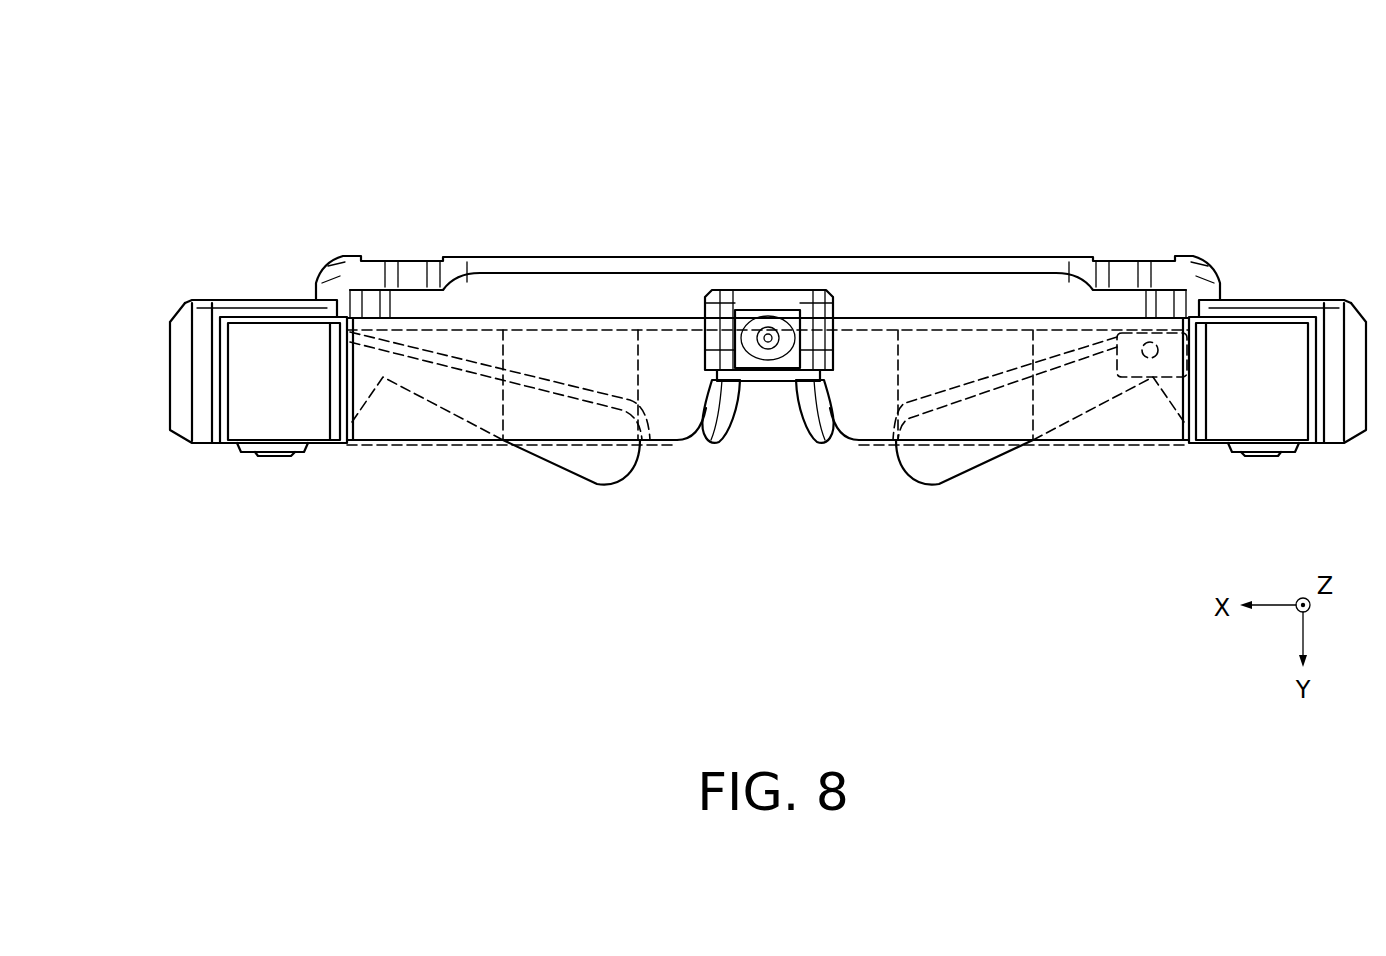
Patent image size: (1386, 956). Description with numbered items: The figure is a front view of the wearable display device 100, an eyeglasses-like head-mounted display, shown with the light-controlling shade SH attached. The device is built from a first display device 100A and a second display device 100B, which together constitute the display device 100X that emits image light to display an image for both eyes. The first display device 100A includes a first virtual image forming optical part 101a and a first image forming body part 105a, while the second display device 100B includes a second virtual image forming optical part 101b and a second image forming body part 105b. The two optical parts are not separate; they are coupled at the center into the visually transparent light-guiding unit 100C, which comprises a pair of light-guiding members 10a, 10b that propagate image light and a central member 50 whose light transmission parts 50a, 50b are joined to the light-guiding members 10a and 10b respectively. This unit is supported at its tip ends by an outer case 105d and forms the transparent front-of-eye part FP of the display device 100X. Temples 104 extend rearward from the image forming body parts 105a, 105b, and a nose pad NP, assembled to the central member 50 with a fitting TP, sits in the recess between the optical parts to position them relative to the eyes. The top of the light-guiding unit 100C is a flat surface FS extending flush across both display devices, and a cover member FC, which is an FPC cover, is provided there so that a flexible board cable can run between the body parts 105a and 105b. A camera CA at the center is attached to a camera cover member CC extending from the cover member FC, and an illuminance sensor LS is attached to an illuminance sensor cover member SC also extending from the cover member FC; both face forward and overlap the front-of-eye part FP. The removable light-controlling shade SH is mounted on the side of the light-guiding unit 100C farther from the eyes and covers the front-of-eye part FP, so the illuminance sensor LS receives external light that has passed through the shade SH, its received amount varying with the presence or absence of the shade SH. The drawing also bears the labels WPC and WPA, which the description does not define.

The wearable display device 100 is at (426, 127).
The first display device 100A is at (1129, 416).
The second display device 100B is at (410, 483).
The visually transparent light-guiding unit 100C is at (768, 538).
The display device 100X is at (767, 453).
The light-guiding member 10a is at (1130, 425).
The light-guiding member 10b is at (405, 425).
The first virtual image forming optical part 101a is at (1043, 425).
The second virtual image forming optical part 101b is at (527, 425).
The temples 104 is at (610, 487).
The first image forming body part 105a is at (1280, 425).
The second image forming body part 105b is at (253, 425).
The outer case 105d is at (265, 298).
The central member 50 is at (767, 498).
The light transmission part 50a is at (873, 425).
The light transmission part 50b is at (665, 425).
The nose pad NP is at (727, 432).
The fitting TP is at (755, 397).
The camera CA is at (738, 337).
The camera cover member CC is at (845, 300).
The front-of-eye part FP is at (489, 317).
The light-controlling shade SH is at (550, 347).
The cover member FC is at (617, 320).
The flat surface FS is at (962, 320).
The illuminance sensor cover member SC is at (1130, 325).
The illuminance sensor LS is at (1152, 340).
The central wearing position WPC is at (774, 226).
The side wearing position WPA is at (1117, 182).